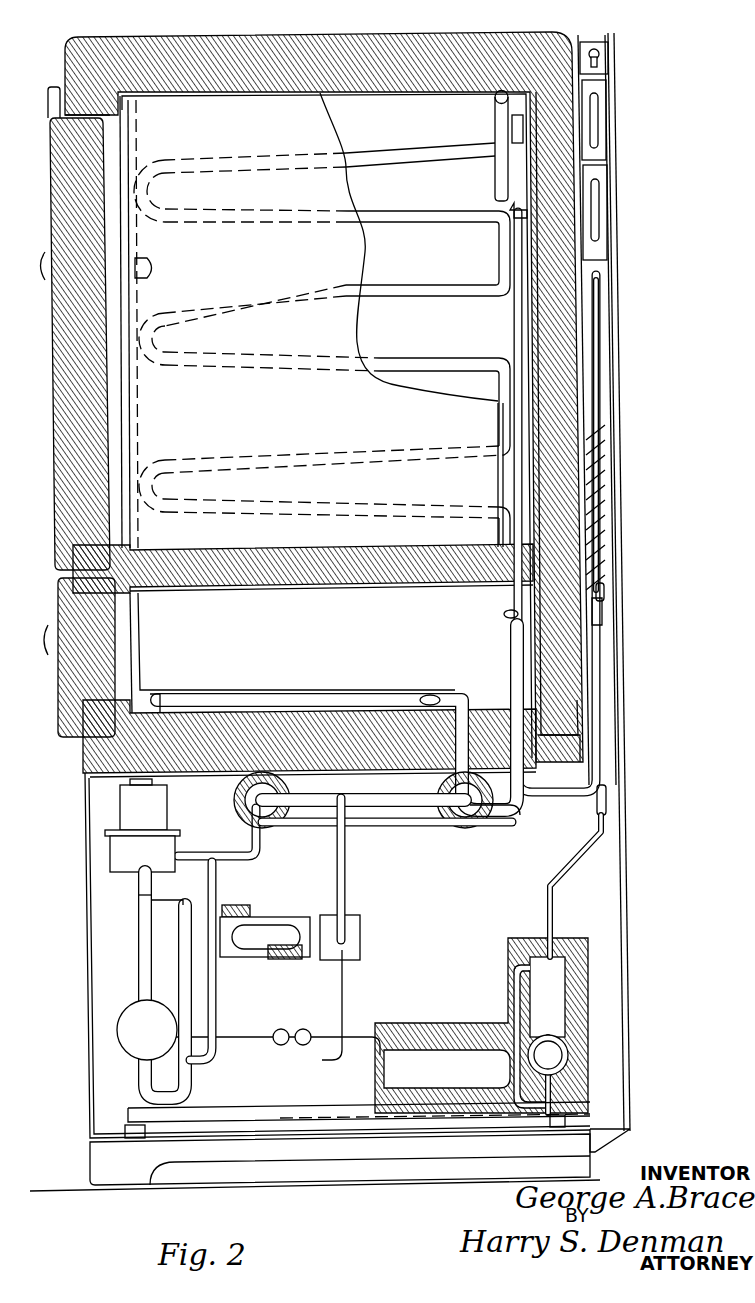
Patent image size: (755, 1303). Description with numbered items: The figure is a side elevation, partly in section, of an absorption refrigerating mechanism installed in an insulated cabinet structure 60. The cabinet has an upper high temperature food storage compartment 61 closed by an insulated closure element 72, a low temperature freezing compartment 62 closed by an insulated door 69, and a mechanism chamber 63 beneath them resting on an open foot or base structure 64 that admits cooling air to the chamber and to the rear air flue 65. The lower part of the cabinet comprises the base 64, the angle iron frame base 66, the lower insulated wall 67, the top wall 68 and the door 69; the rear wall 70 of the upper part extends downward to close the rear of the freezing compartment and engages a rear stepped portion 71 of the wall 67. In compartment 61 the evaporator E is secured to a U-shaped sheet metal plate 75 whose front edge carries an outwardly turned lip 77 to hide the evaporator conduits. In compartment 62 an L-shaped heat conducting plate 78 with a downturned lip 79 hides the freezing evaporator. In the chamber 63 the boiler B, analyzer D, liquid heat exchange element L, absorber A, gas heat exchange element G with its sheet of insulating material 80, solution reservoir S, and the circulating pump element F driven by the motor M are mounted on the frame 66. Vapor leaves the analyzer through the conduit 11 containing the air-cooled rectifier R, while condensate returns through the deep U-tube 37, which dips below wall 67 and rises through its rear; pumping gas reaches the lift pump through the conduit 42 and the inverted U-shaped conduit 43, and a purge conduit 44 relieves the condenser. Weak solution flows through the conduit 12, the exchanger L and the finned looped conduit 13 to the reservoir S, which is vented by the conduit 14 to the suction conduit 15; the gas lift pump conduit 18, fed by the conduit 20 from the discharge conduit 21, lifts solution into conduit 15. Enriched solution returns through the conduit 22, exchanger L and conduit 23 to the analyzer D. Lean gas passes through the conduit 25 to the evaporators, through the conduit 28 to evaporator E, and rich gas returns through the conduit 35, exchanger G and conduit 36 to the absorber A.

The insulated cabinet structure 60 is at (300, 37).
The rear wall 70 is at (557, 413).
The purge conduit 44 is at (625, 634).
The insulated closure element 72 is at (82, 408).
The insulated door 69 is at (112, 627).
The outwardly turned lip 77 is at (150, 268).
The top wall 68 is at (300, 566).
The lower insulated wall 67 is at (336, 919).
The low temperature freezing compartment 62 is at (292, 653).
The U-shaped sheet metal plate 75 is at (315, 320).
The high temperature food storage compartment 61 is at (451, 146).
The high temperature evaporating element E is at (448, 290).
The conduit 42 is at (512, 325).
The inverted U-shaped conduit 43 is at (512, 212).
The rear air flue 65 is at (594, 374).
The air-cooled rectifier R is at (606, 530).
The deep U-tube 37 is at (607, 605).
The conduit 11 is at (600, 60).
The rear stepped portion 71 is at (580, 732).
The conduit 28 is at (504, 625).
The conduit 25 is at (337, 717).
The downturned lip 79 is at (157, 698).
The L-shaped heat conducting plate 78 is at (480, 698).
The discharge conduit 21 is at (197, 850).
The sheet of insulating material 80 is at (468, 830).
The conduit 35 is at (505, 805).
The gas heat exchange element G is at (425, 832).
The conduit 36 is at (350, 884).
The conduit 22 is at (346, 984).
The electrical motor M is at (143, 804).
The circulating pump element F is at (142, 851).
The conduit 14 is at (138, 963).
The suction conduit 15 is at (138, 897).
The gas lift pump conduit 18 is at (184, 985).
The conduit 20 is at (217, 1004).
The solution reservoir S is at (147, 1030).
The finned looped conduit 13 is at (290, 1046).
The tubular air cooled absorber A is at (258, 958).
The mechanism chamber 63 is at (455, 909).
The conduit 12 is at (555, 1090).
The analyzer D is at (547, 997).
The conduit 23 is at (513, 990).
The boiler B is at (570, 1062).
The liquid heat exchange element L is at (440, 1050).
The angle iron frame base 66 is at (244, 1110).
The open foot or base structure 64 is at (297, 1162).